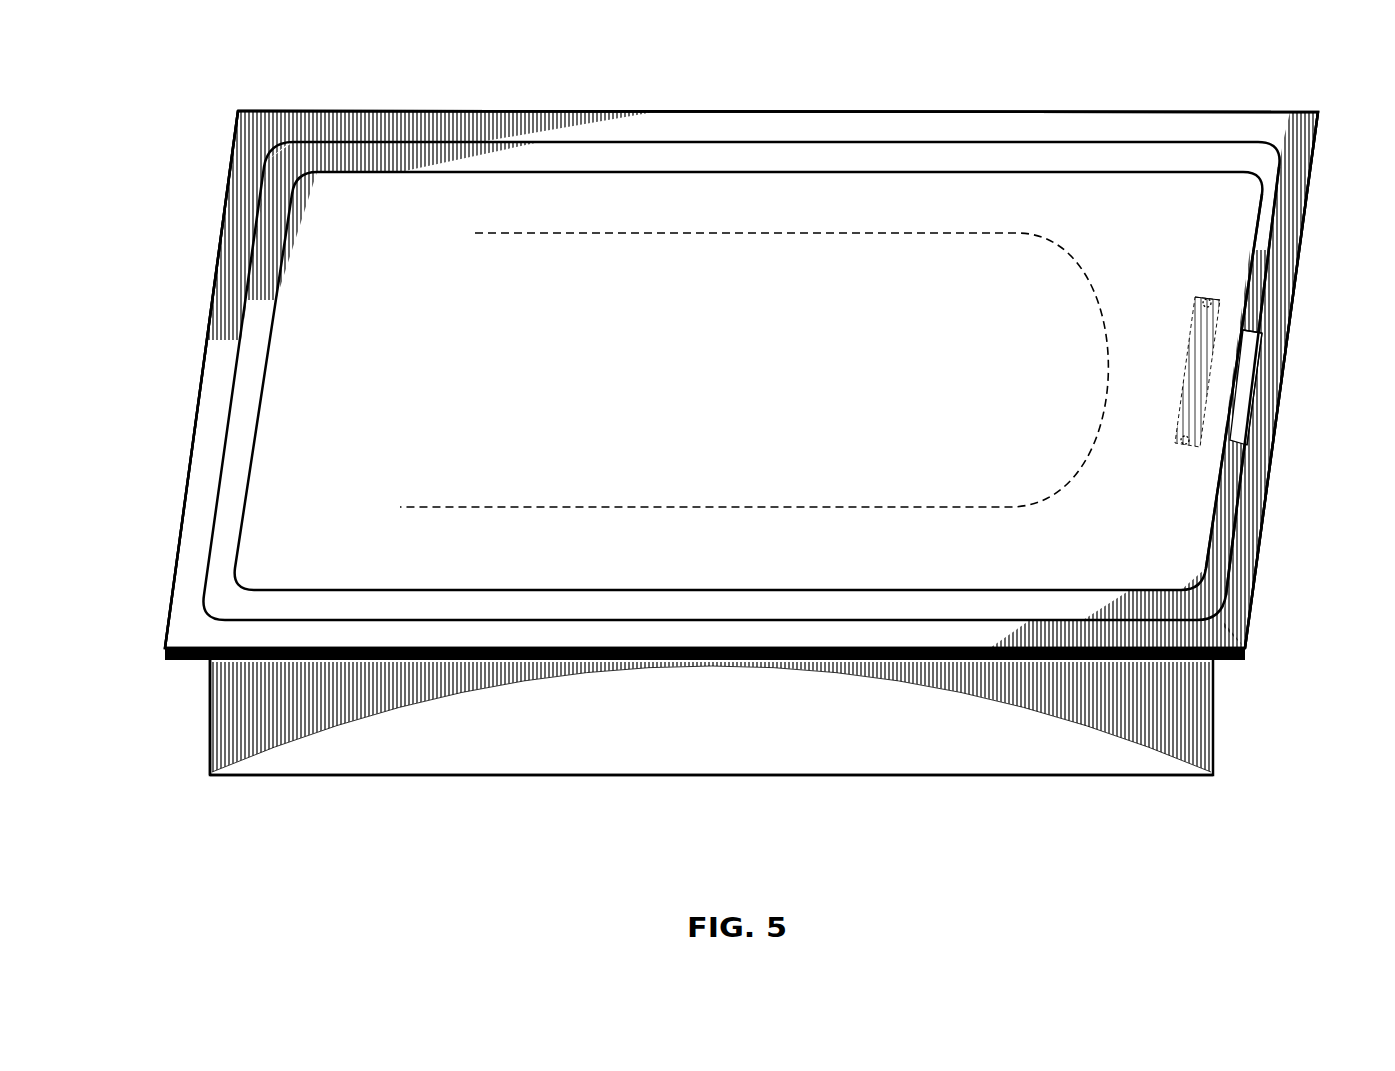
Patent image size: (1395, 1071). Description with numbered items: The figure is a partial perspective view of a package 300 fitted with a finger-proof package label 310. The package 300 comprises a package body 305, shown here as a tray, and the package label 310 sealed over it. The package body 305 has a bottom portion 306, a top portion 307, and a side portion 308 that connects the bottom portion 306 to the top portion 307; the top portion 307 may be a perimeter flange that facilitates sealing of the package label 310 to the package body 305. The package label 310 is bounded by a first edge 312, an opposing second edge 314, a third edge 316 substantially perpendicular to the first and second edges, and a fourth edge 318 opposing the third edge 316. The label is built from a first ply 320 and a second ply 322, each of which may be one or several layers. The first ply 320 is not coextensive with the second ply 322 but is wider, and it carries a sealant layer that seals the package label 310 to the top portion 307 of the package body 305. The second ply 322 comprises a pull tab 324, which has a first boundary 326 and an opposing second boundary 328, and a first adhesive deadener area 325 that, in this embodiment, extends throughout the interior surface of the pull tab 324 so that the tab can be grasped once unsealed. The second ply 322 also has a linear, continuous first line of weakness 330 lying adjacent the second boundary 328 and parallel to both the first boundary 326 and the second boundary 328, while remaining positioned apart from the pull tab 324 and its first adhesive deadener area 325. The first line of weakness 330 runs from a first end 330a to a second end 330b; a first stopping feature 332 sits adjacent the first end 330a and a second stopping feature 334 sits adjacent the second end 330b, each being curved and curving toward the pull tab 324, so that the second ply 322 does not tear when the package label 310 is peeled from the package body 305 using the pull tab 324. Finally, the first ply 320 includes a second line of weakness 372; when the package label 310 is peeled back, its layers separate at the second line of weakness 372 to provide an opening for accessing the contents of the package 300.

The package 300 is at (152, 137).
The package body 305 is at (1233, 726).
The bottom portion 306 is at (360, 778).
The top portion 307 is at (170, 663).
The side portion 308 is at (823, 742).
The package label 310 is at (172, 514).
The first edge 312 is at (1290, 337).
The second edge 314 is at (200, 380).
The third edge 316 is at (447, 110).
The fourth edge 318 is at (1200, 657).
The first ply 320 is at (265, 135).
The second ply 322 is at (905, 195).
The pull tab 324 is at (1255, 310).
The first adhesive deadener area 325 is at (1312, 291).
The first boundary 326 is at (1260, 400).
The second boundary 328 is at (1243, 352).
The first line of weakness 330 is at (1188, 360).
The first end 330a is at (1198, 306).
The second end 330b is at (1180, 428).
The first stopping feature 332 is at (1203, 293).
The second stopping feature 334 is at (1220, 490).
The second line of weakness 372 is at (520, 505).